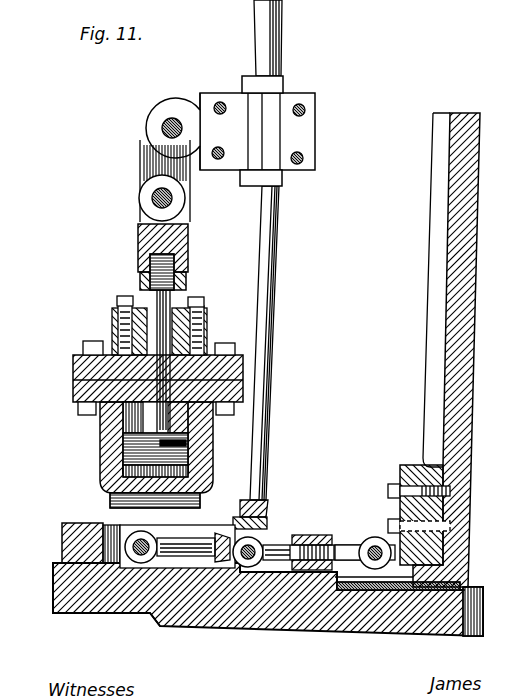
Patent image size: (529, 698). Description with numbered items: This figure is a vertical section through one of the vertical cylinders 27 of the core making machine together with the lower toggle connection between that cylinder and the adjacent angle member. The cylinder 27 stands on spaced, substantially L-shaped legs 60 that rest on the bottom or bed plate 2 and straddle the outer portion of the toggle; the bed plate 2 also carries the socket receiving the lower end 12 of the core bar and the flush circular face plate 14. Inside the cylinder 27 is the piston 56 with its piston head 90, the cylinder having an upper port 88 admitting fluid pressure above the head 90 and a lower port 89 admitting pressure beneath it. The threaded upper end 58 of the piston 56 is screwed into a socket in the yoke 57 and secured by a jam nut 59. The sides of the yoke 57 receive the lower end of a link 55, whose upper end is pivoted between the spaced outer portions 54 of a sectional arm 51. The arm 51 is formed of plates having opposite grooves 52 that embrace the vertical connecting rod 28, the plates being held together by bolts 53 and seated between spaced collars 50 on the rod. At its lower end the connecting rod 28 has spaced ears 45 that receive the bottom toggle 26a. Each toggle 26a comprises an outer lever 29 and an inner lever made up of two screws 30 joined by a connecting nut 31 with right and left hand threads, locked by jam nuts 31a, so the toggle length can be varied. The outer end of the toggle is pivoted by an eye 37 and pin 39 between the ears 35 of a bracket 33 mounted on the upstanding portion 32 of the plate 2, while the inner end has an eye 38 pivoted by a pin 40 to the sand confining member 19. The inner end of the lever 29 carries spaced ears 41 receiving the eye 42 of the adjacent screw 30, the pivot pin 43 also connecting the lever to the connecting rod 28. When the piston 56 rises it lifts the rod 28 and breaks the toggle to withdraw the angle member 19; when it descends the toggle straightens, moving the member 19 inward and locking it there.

The bottom or bed plate 2 is at (312, 618).
The lower end of core bar 12 is at (315, 133).
The face plate 14 is at (420, 602).
The sand confining member 19 is at (468, 366).
The toggle 26a is at (292, 538).
The vertical cylinder 27 is at (112, 478).
The vertical connecting rod 28 is at (268, 290).
The outer lever 29 is at (166, 580).
The screw 30 is at (346, 548).
The connecting nut 31 is at (298, 566).
The jam nut 31a is at (296, 516).
The upstanding portion 32 is at (62, 540).
The bracket 33 is at (410, 465).
The ear 35 is at (430, 578).
The eye 37 is at (162, 540).
The eye 38 is at (376, 536).
The pin 39 is at (142, 540).
The pin 40 is at (372, 590).
The ear 41 is at (224, 536).
The eye 42 is at (252, 530).
The pivot or pin 43 is at (248, 568).
The ear 45 is at (272, 478).
The collar 50 is at (282, 182).
The sectional arm 51 is at (207, 93).
The groove 52 is at (280, 128).
The bolt 53 is at (224, 112).
The outer portion of plate 54 is at (152, 110).
The link 55 is at (152, 164).
The piston 56 is at (150, 306).
The yoke 57 is at (180, 222).
The upper end of piston 58 is at (150, 258).
The jam nut 59 is at (140, 283).
The leg 60 is at (200, 503).
The upper port 88 is at (198, 428).
The lower port 89 is at (170, 482).
The piston head 90 is at (150, 445).